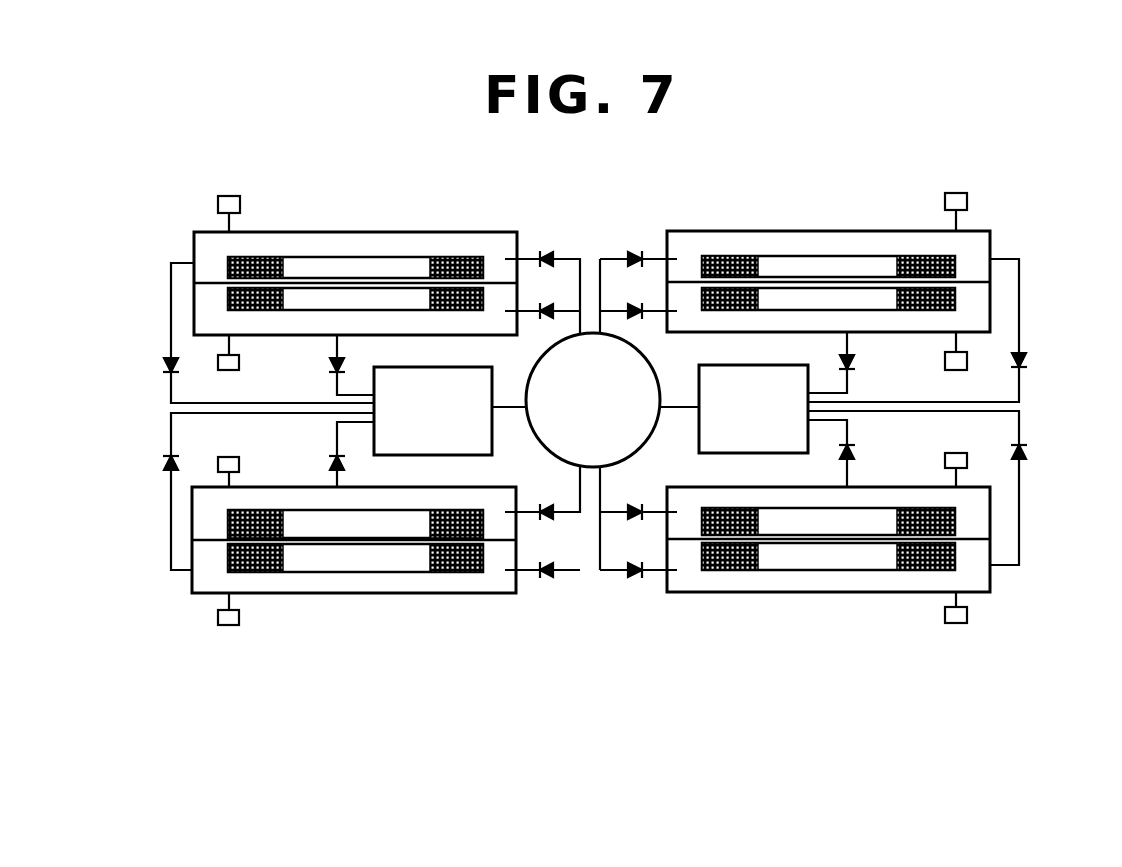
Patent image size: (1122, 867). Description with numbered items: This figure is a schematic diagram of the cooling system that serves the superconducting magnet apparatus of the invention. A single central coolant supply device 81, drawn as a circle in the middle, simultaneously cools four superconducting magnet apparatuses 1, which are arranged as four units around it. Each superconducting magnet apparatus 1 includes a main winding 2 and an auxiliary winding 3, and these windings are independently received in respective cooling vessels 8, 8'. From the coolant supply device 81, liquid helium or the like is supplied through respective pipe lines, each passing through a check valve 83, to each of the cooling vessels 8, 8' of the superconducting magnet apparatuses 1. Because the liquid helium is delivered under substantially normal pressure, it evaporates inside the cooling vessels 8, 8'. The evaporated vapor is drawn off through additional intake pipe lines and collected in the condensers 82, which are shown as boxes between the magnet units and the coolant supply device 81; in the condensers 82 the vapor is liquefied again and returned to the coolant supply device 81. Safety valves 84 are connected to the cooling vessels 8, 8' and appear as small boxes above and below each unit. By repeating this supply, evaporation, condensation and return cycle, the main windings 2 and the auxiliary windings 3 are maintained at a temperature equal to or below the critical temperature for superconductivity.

The superconducting magnet apparatus 1 is at (594, 414).
The main winding 2 is at (452, 312).
The auxiliary winding 3 is at (591, 413).
The cooling vessel 8 is at (594, 412).
The cooling vessel 8' is at (591, 413).
The coolant supply device 81 is at (657, 413).
The condenser 82 is at (492, 418).
The check valve 83 is at (597, 427).
The safety valve 84 is at (612, 416).